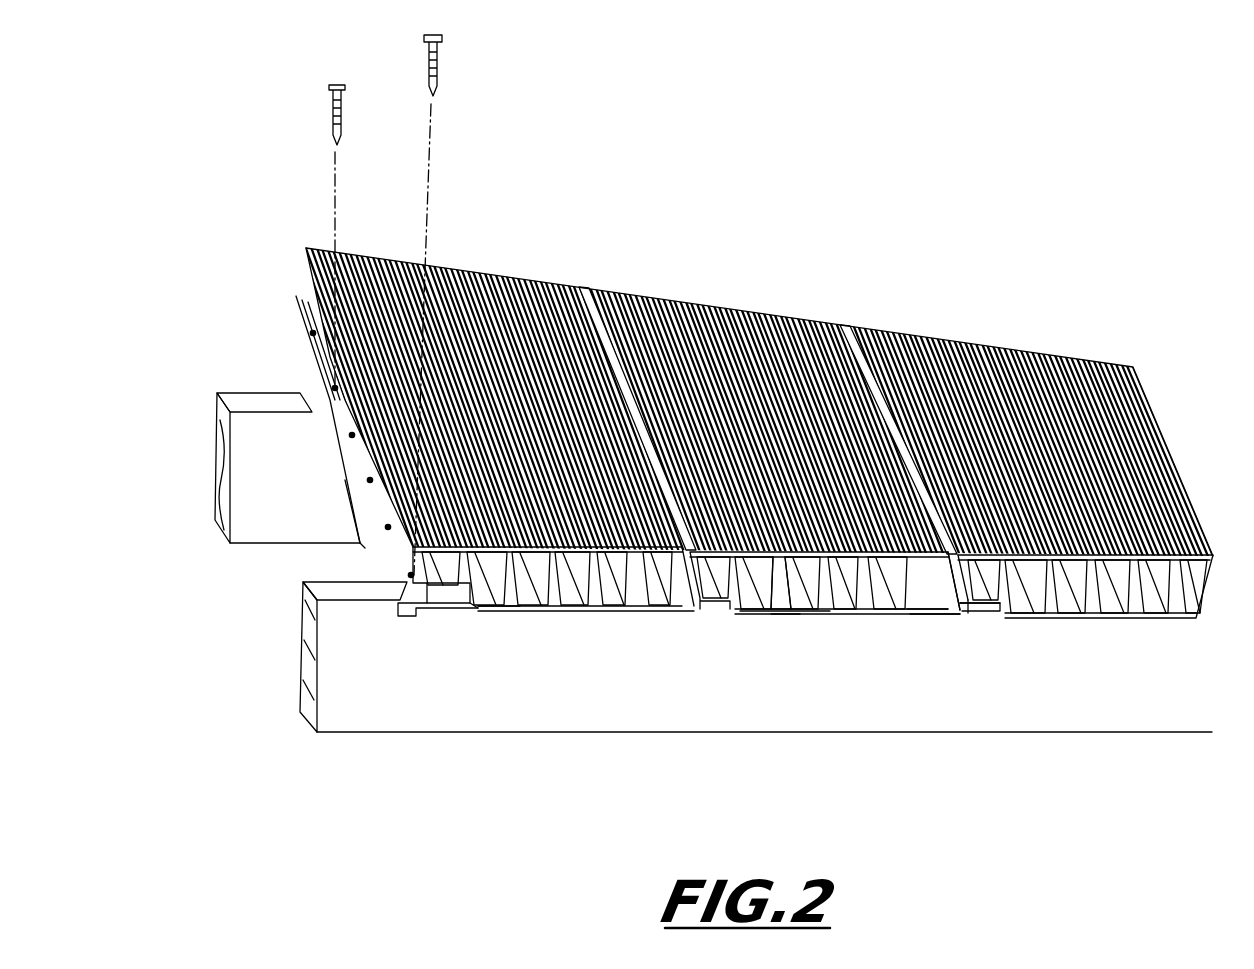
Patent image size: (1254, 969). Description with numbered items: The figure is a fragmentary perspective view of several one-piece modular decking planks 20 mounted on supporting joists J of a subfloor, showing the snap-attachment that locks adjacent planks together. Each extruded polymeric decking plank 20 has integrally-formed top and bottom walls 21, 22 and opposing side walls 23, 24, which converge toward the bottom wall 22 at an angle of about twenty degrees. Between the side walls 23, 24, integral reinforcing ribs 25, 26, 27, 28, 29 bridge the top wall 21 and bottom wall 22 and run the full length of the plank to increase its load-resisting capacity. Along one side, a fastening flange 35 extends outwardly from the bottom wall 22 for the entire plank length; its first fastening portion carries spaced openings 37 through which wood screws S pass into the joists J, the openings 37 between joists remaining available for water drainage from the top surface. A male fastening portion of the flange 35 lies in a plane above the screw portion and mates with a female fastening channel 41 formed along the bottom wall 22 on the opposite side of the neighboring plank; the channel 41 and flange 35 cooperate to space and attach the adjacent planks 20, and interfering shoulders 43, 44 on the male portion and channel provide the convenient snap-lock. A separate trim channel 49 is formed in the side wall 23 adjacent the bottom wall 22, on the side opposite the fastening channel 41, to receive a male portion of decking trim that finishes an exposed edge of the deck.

The decking plank 20 is at (626, 313).
The top wall 21 is at (445, 548).
The bottom wall 22 is at (790, 607).
The side wall 23 is at (423, 606).
The side wall 24 is at (940, 581).
The reinforcing rib 25 is at (750, 580).
The reinforcing rib 26 is at (773, 588).
The reinforcing rib 27 is at (792, 606).
The reinforcing rib 28 is at (820, 591).
The reinforcing rib 29 is at (933, 609).
The fastening flange 35 is at (382, 562).
The spaced openings 37 is at (331, 389).
The female fastening channel 41 is at (915, 591).
The interfering shoulder 43 is at (382, 601).
The interfering shoulder 44 is at (925, 606).
The trim channel 49 is at (487, 607).
The wood screw S is at (428, 77).
The joist J is at (265, 527).